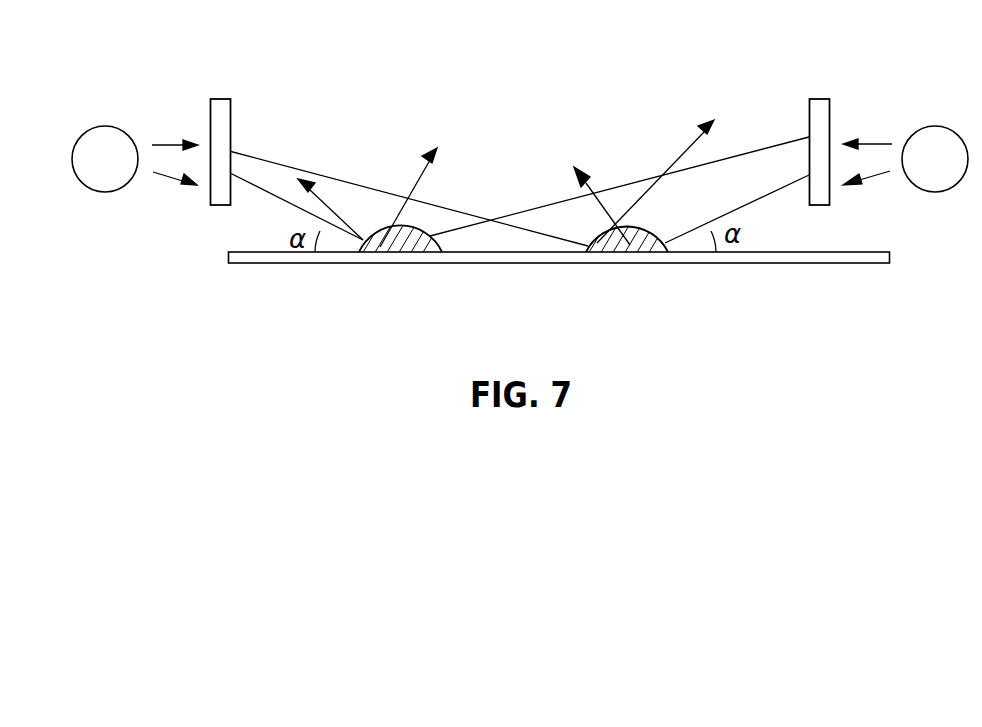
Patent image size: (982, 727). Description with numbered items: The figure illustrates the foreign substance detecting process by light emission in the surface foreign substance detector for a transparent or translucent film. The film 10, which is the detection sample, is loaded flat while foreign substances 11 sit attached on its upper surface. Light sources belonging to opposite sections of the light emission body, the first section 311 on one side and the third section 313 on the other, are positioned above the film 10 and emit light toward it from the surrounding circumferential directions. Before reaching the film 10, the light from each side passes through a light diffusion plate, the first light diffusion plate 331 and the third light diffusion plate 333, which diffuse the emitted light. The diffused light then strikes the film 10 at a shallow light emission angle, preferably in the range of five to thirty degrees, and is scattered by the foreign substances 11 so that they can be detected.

The first section 311 is at (105, 138).
The third section 313 is at (936, 135).
The first light diffusion plate 331 is at (223, 106).
The third light diffusion plate 333 is at (822, 106).
The film 10 is at (808, 257).
The foreign substance 11 is at (628, 243).